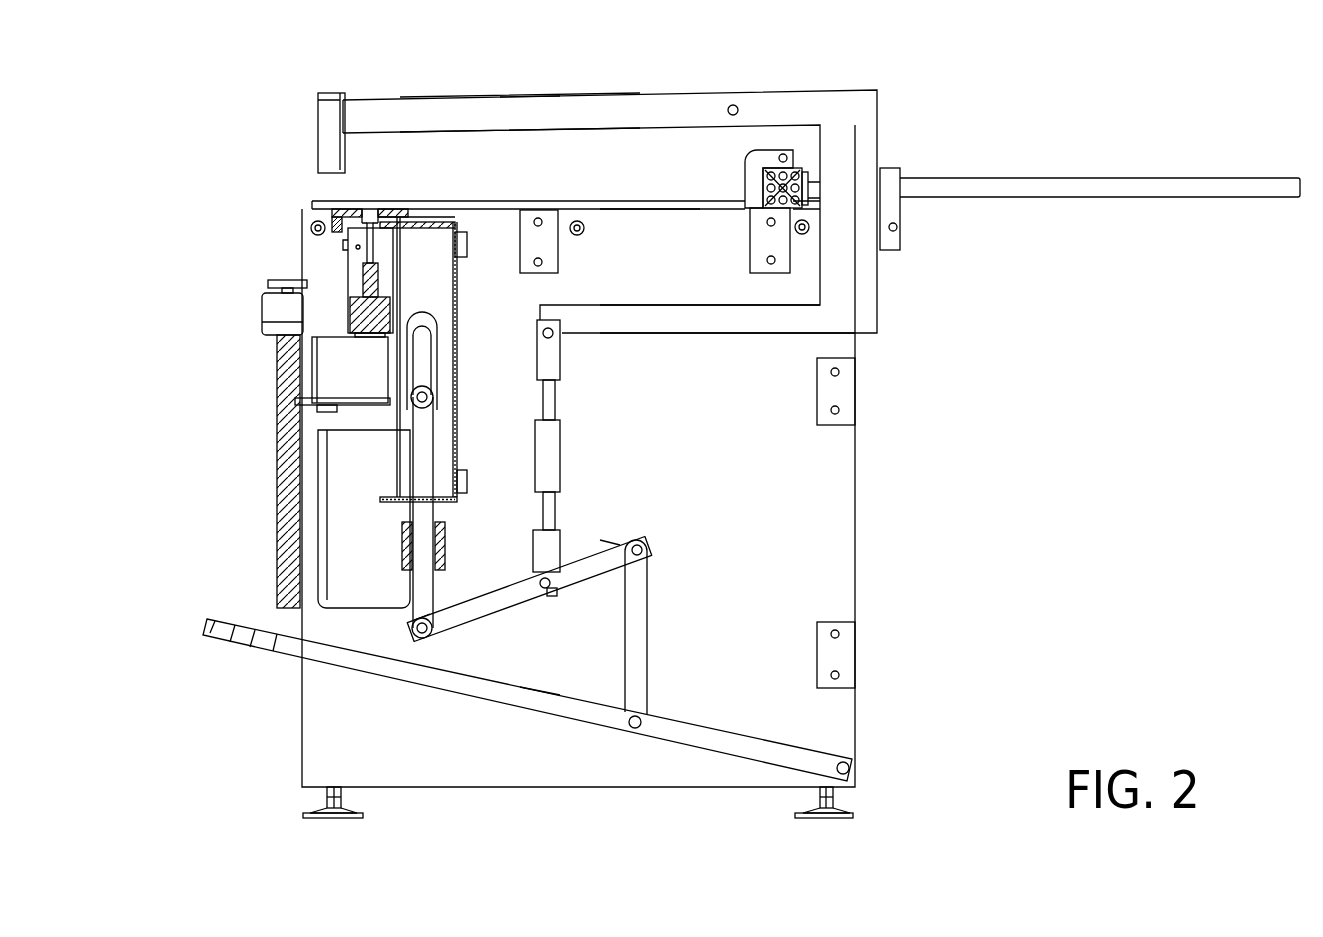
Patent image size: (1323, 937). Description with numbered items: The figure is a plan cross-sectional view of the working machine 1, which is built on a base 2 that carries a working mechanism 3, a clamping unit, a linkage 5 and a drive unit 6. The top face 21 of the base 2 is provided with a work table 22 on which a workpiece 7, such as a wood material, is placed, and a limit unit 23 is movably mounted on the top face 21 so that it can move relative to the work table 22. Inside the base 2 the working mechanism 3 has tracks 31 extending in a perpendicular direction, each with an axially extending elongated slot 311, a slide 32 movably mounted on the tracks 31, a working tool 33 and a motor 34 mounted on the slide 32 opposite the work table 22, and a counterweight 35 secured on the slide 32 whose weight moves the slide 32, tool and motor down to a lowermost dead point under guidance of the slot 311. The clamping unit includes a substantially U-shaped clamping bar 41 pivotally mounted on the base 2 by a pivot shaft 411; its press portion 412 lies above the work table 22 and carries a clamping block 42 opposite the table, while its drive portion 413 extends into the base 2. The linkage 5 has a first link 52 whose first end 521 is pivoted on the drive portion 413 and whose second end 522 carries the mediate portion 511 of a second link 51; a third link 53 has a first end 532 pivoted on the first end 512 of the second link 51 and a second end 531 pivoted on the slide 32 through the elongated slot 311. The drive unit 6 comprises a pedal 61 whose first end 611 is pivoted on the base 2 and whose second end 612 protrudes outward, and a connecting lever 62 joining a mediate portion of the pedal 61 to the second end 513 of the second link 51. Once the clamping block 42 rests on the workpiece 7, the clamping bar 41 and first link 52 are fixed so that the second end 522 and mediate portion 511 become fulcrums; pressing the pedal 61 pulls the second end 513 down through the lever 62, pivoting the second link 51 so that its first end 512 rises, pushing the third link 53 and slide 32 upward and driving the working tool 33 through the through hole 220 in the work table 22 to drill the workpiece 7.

The sewing machine apparatus 1 is at (530, 86).
The base 2 is at (870, 445).
The working mechanism 3 is at (298, 384).
The linkage 5 is at (668, 548).
The drive unit 6 is at (541, 724).
The workpiece 7 is at (468, 190).
The top face 21 is at (636, 222).
The work table 22 is at (381, 210).
The limit unit 23 is at (762, 150).
The track 31 is at (377, 457).
The slide 32 is at (335, 355).
The working tool 33 is at (368, 253).
The motor 34 is at (330, 522).
The counterweight 35 is at (293, 577).
The clamping bar 41 is at (875, 123).
The clamping block 42 is at (328, 115).
The second link 51 is at (476, 622).
The first link 52 is at (560, 468).
The third link 53 is at (403, 553).
The pedal 61 is at (443, 693).
The connecting lever 62 is at (648, 610).
The through hole 220 is at (368, 212).
The elongated slot 311 is at (410, 370).
The pivot shaft 411 is at (733, 104).
The press portion 412 is at (585, 118).
The drive portion 413 is at (785, 320).
The mediate portion 511 is at (550, 586).
The first end 512 is at (414, 625).
The second end 513 is at (650, 560).
The first end 521 is at (562, 340).
The second end 522 is at (548, 592).
The second end 531 is at (413, 402).
The first end 532 is at (422, 638).
The first end 611 is at (858, 770).
The second end 612 is at (222, 640).